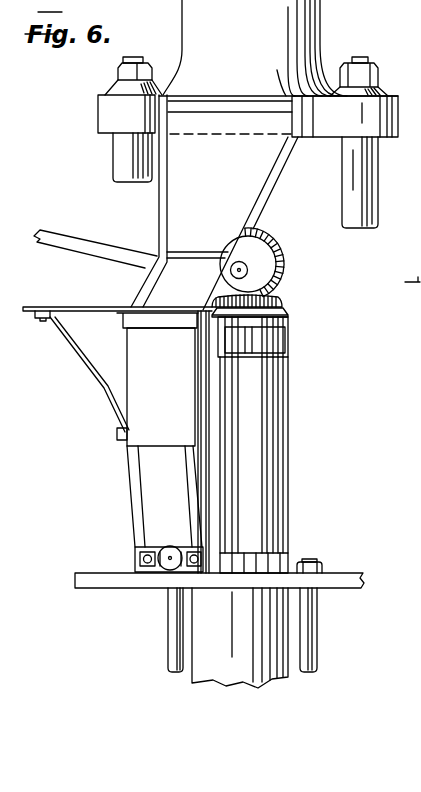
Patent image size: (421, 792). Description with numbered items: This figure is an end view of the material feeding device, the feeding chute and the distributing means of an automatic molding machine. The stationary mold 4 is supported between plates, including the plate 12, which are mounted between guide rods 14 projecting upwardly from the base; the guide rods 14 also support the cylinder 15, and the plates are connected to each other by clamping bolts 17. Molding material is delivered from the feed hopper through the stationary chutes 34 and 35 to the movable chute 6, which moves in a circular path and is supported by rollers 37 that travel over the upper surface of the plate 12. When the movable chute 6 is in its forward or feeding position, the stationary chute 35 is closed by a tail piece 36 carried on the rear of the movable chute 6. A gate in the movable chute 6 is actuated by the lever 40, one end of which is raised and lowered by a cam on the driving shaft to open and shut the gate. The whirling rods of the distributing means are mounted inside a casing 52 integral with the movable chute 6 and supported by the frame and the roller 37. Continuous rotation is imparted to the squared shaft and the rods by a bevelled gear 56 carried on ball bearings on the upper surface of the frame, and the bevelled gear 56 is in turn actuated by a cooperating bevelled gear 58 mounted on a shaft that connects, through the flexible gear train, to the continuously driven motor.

The stationary mold 4 is at (273, 610).
The movable chute 6 is at (150, 408).
The plate 12 is at (108, 564).
The guide rods 14 is at (97, 164).
The cylinder 15 is at (300, 24).
The clamping bolts 17 is at (160, 650).
The stationary chute 34 is at (243, 190).
The stationary chute 35 is at (168, 277).
The tail piece 36 is at (82, 303).
The rollers 37 is at (163, 572).
The lever 40 is at (92, 233).
The casing 52 is at (265, 435).
The bevelled gear 56 is at (277, 307).
The bevelled gear 58 is at (258, 260).